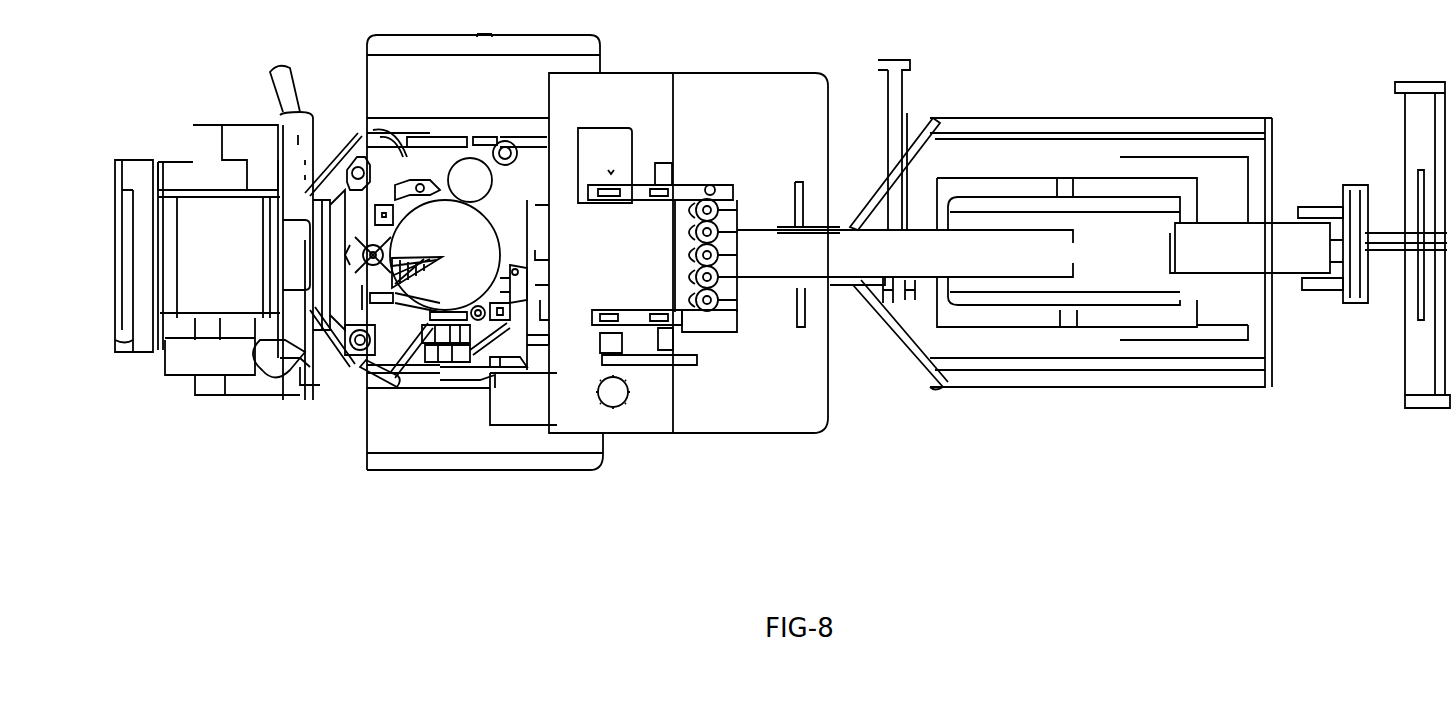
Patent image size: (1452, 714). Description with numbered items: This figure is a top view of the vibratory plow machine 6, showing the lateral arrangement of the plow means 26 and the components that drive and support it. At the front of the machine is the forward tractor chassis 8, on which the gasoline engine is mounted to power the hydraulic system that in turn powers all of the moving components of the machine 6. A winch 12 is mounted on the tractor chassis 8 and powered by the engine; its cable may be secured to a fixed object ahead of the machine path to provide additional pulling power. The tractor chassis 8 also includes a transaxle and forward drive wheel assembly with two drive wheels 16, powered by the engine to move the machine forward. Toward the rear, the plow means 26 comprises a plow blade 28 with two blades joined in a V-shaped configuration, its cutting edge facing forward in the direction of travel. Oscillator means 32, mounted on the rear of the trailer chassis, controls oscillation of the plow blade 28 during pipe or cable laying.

The vibratory plow machine 6 is at (1085, 400).
The forward tractor chassis 8 is at (655, 456).
The winch 12 is at (235, 270).
The drive wheels 16 is at (452, 438).
The plow means 26 is at (1378, 140).
The plow blade 28 is at (1410, 367).
The oscillator means 32 is at (1327, 293).